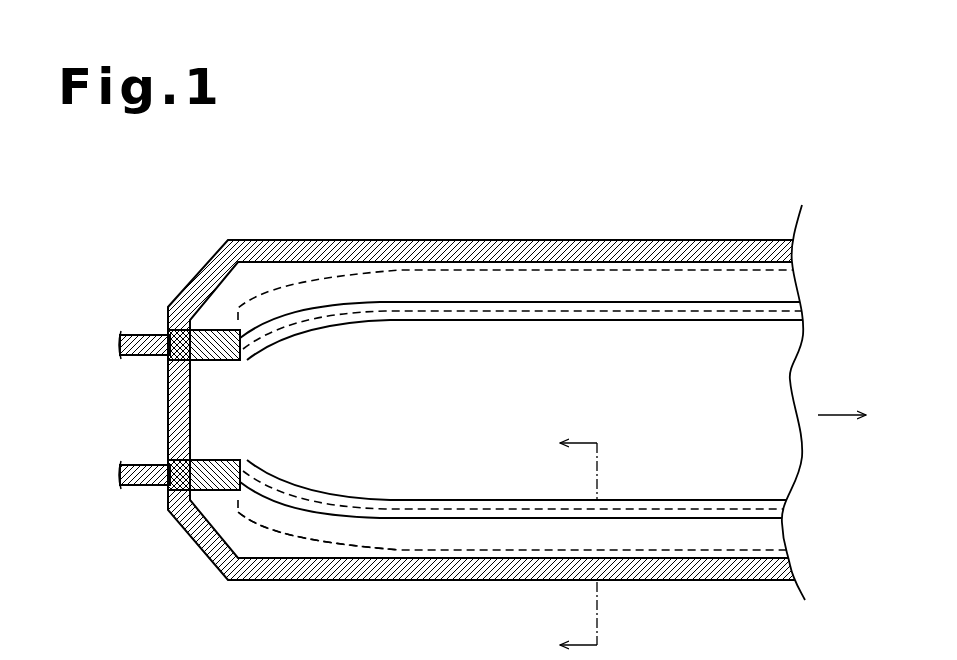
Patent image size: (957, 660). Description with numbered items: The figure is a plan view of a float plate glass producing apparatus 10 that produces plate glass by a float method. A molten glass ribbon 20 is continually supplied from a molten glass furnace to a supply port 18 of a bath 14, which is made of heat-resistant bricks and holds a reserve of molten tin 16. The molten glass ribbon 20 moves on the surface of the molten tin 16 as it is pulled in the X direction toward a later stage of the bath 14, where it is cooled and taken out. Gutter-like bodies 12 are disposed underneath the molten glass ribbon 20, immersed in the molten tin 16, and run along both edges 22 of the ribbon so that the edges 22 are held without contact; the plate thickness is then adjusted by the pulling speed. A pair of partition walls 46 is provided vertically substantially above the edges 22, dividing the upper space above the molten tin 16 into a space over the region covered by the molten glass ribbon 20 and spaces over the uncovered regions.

The float plate glass producing apparatus 10 is at (814, 148).
The gutter-like body 12 is at (663, 266).
The bath 14 is at (617, 236).
The molten tin 16 is at (300, 537).
The supply port 18 is at (170, 411).
The molten glass ribbon 20 is at (337, 340).
The edge 22 is at (543, 302).
The partition wall 46 is at (427, 317).